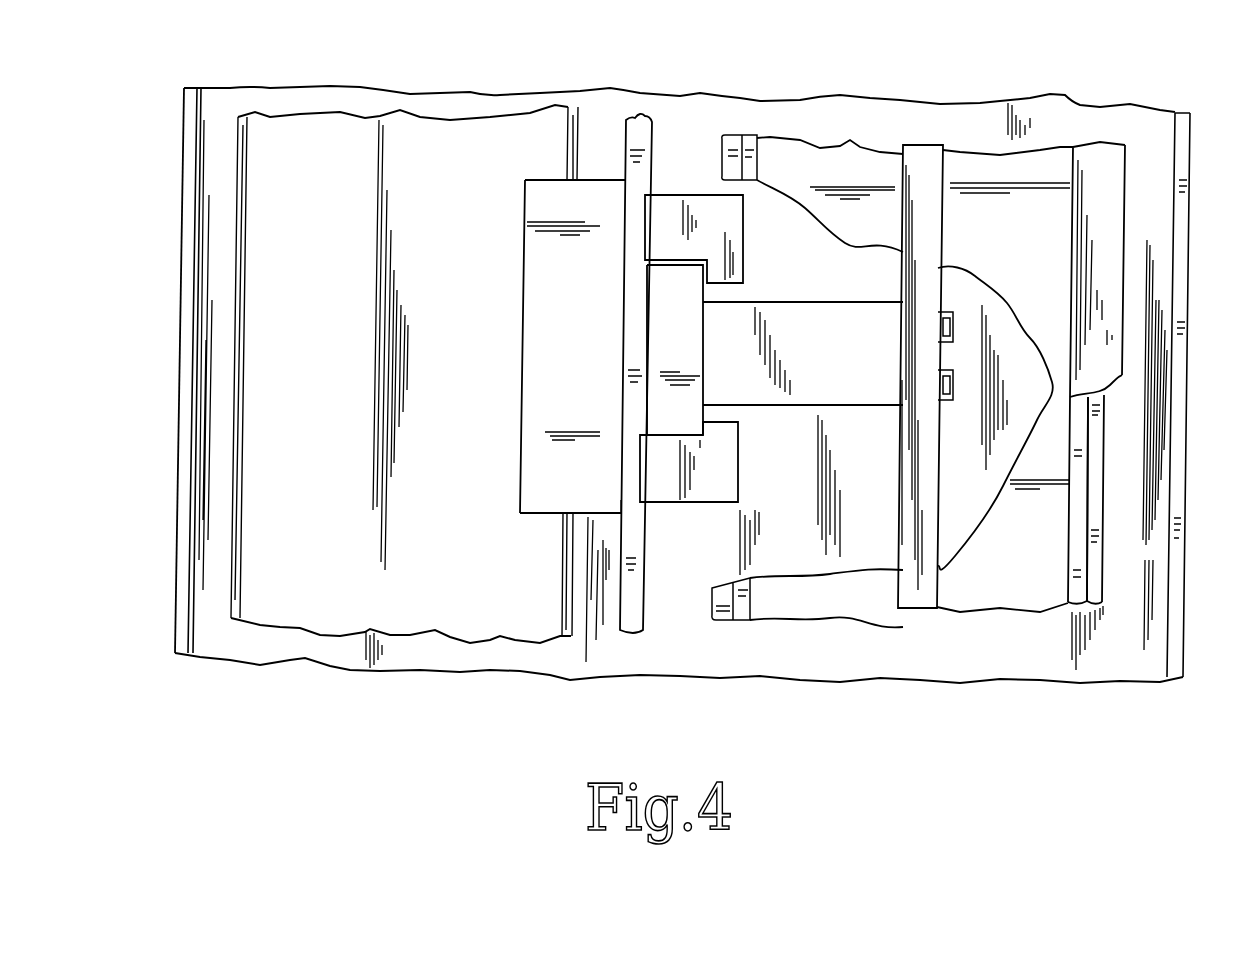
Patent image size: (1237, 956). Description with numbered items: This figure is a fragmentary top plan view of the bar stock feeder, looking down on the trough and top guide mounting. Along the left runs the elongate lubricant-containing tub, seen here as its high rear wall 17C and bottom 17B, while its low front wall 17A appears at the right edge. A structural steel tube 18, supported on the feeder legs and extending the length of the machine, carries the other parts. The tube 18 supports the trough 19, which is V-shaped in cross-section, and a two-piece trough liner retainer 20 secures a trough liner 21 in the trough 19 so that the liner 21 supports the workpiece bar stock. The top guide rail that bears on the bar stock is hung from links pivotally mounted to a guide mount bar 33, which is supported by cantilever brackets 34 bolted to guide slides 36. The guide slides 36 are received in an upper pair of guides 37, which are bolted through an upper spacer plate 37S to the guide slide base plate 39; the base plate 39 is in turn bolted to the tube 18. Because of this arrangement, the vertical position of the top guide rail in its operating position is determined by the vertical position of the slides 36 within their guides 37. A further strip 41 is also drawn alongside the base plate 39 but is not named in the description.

The low front wall 17A is at (1186, 514).
The bottom 17B is at (196, 512).
The high rear wall 17C is at (178, 380).
The structural steel tube 18 is at (478, 130).
The trough 19 is at (1096, 490).
The trough liner retainer 20 is at (1115, 254).
The trough liner 21 is at (1086, 447).
The guide mount bar 33 is at (940, 170).
The cantilever brackets 34 is at (858, 316).
The guide slides 36 is at (690, 372).
The upper pair of guides 37 is at (730, 252).
The upper spacer plate 37S is at (632, 512).
The guide slide base plate 39 is at (606, 194).
The vertical bar 41 is at (655, 122).